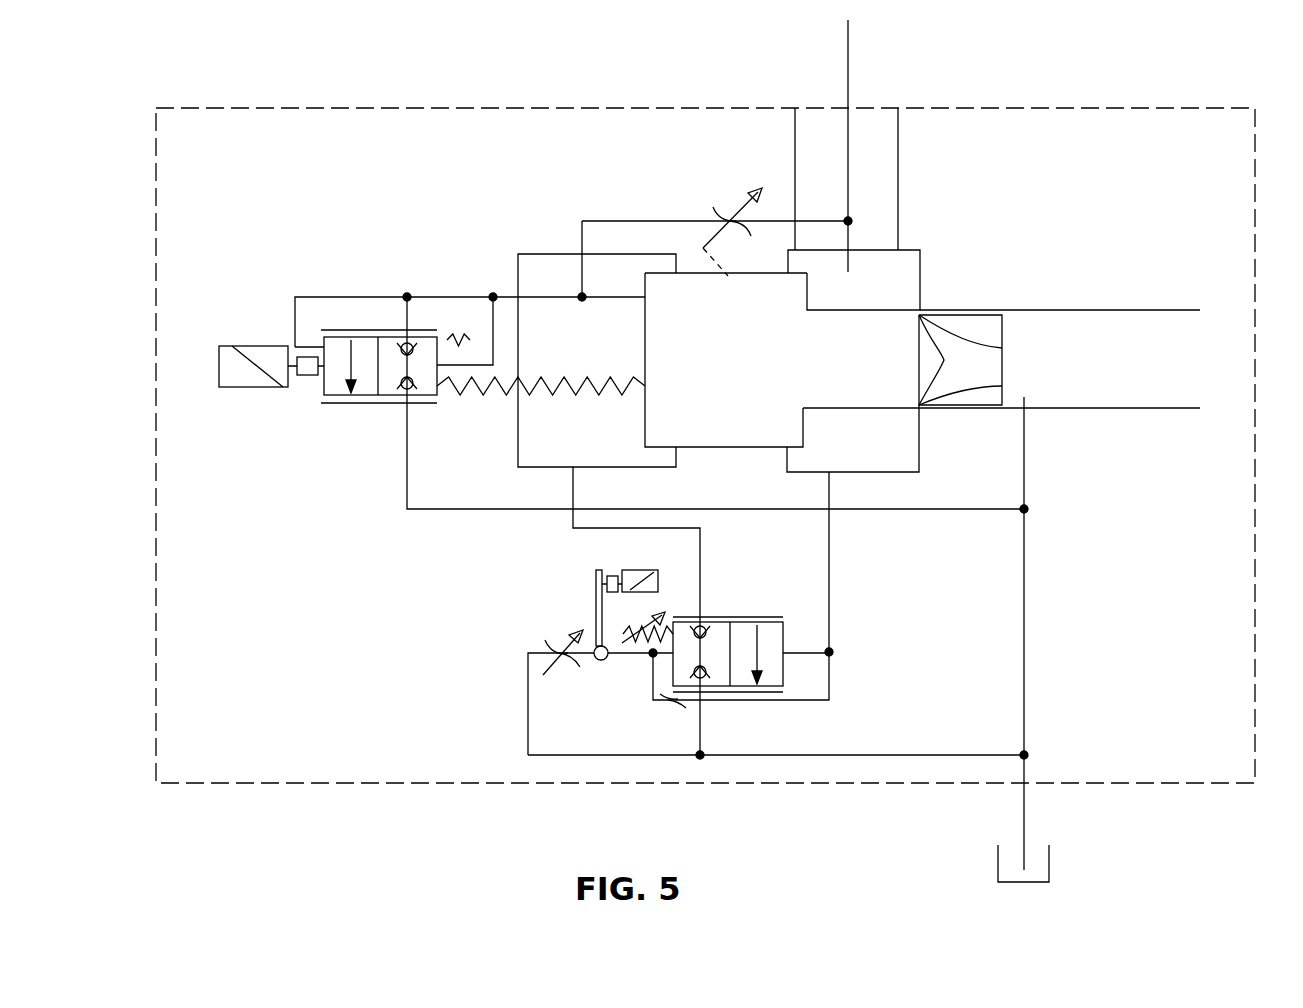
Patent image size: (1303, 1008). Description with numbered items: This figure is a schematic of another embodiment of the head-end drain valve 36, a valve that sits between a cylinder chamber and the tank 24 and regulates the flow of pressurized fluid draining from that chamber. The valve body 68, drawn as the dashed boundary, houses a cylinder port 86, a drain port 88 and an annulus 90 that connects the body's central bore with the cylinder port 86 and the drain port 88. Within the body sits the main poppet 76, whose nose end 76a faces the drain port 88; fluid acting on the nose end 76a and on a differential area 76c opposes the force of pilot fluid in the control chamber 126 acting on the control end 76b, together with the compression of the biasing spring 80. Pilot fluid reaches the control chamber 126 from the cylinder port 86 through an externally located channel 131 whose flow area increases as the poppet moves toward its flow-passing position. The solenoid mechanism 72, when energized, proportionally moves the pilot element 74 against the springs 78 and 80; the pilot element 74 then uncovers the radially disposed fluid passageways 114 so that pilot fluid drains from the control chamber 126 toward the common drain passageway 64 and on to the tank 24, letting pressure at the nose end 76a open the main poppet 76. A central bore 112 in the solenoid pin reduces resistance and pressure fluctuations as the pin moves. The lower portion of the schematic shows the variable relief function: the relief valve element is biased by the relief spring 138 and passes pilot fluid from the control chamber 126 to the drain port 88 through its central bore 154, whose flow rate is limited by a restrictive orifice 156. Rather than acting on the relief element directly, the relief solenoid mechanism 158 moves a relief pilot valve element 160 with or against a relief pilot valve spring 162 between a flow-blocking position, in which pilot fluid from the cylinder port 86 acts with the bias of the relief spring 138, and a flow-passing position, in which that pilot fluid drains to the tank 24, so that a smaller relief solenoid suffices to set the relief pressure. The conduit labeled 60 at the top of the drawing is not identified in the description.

The head-end drain valve 36 is at (383, 160).
The supply line 60 is at (848, 38).
The externally-located channel 131 is at (707, 212).
The cylinder port 86 is at (846, 179).
The annulus 90 is at (854, 280).
The main poppet 76 is at (726, 360).
The nose end 76a is at (988, 366).
The control end 76b is at (645, 323).
The differential area 76c is at (810, 432).
The drain port 88 is at (1059, 359).
The biasing spring 80 is at (552, 386).
The control chamber 126 is at (609, 438).
The central bore 112 is at (318, 297).
The biasing spring 78 is at (447, 340).
The solenoid mechanism 72 is at (255, 390).
The pilot element 74 is at (340, 408).
The fluid passageways 114 is at (407, 468).
The common drain passageway 64 is at (1024, 550).
The tank 24 is at (1049, 870).
The relief solenoid mechanism 158 is at (638, 573).
The relief spring 138 is at (630, 629).
The relief pilot valve spring 162 is at (548, 646).
The relief pilot valve element 160 is at (601, 661).
The restrictive orifice 156 is at (666, 710).
The central bore 154 is at (745, 694).
The valve body 68 is at (156, 695).